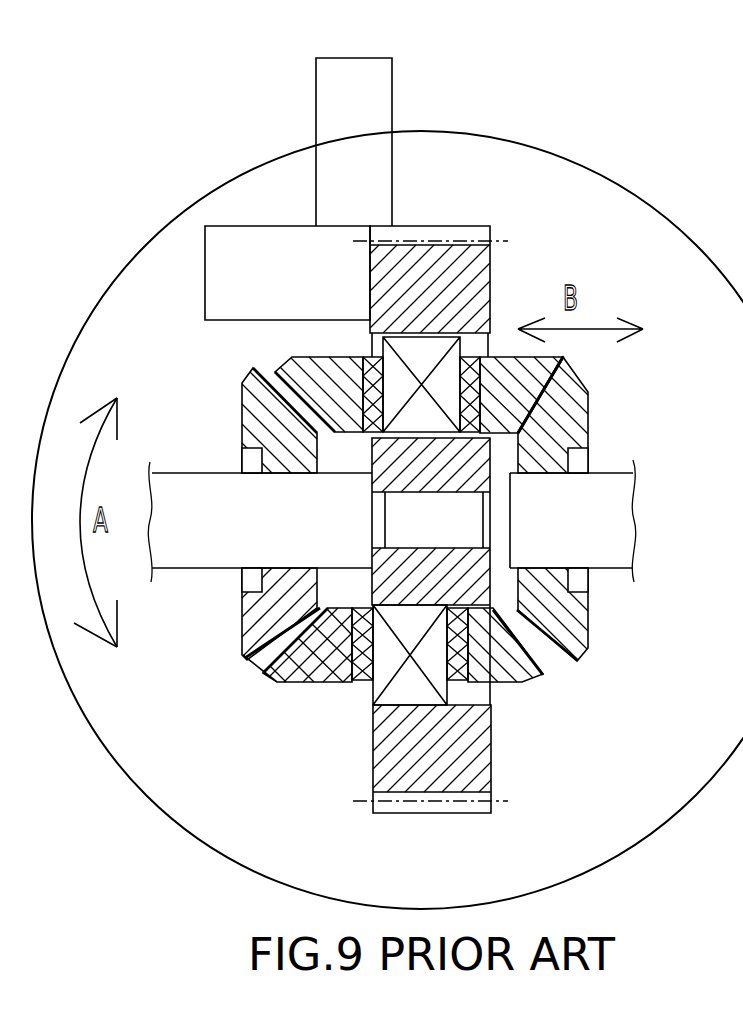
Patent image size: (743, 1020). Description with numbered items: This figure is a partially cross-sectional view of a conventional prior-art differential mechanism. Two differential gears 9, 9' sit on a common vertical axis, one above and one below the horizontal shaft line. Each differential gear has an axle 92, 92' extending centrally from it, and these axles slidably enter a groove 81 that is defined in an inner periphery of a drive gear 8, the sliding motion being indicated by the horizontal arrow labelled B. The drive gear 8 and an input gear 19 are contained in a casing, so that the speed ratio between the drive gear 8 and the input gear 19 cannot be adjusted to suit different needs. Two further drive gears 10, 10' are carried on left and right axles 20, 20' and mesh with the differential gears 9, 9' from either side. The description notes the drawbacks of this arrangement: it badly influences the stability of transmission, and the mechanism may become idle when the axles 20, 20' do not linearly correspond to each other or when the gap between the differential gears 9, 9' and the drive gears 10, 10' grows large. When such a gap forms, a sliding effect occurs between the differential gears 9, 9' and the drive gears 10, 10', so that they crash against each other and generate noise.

The input gear 19 is at (242, 262).
The drive gear 8 is at (473, 287).
The axle 92 is at (480, 322).
The differential gear 9 is at (369, 378).
The differential gear 9' is at (390, 691).
The drive gear 10' is at (233, 528).
The drive gear 10 is at (593, 531).
The axle 20' is at (260, 486).
The axle 20 is at (612, 483).
The axle 92' is at (369, 703).
The groove 81 is at (465, 702).